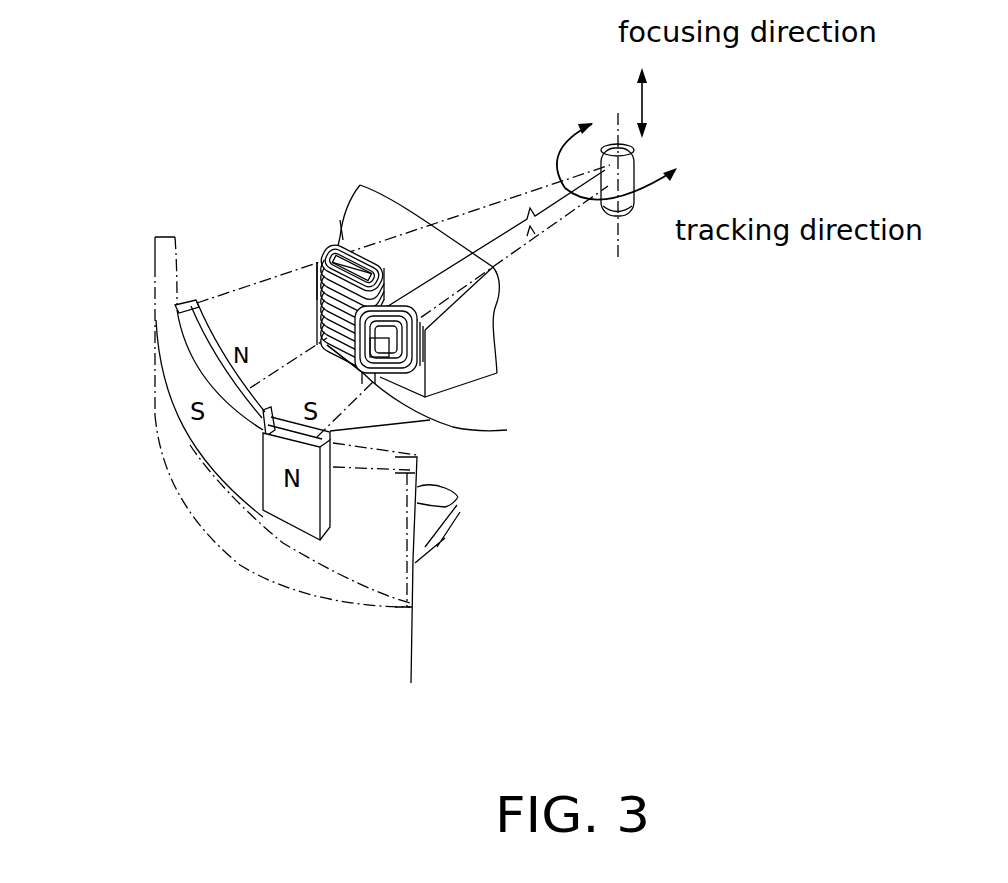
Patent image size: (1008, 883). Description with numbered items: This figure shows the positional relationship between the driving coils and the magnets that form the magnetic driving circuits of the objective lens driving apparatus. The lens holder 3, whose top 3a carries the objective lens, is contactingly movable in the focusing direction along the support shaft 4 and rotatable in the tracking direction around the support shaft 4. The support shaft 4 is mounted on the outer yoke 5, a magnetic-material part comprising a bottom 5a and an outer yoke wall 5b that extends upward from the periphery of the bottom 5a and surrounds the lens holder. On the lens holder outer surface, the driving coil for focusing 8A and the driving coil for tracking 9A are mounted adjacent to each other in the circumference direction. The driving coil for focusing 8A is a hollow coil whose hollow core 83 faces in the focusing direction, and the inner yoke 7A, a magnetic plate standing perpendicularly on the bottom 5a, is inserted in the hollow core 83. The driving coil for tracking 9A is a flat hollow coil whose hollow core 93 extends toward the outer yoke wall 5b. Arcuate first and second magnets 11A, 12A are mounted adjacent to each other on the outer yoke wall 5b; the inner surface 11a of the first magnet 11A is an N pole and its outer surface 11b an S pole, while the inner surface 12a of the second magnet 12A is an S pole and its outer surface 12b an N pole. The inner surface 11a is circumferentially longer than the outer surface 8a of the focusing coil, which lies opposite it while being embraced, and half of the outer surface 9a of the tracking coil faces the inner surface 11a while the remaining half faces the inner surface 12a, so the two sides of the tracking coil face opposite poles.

The lens holder 3 is at (515, 357).
The top 3a is at (481, 297).
The support shaft 4 is at (630, 183).
The outer yoke 5 is at (412, 591).
The bottom 5a is at (425, 543).
The outer yoke wall 5b is at (458, 497).
The inner yoke 7A is at (350, 253).
The driving coil for focusing 8A is at (327, 243).
The outer surface of driving coil for focusing 8a is at (315, 290).
The hollow core 83 is at (333, 245).
The driving coil for tracking 9A is at (458, 384).
The outer surface of driving coil for tracking 9a is at (478, 380).
The hollow core 93 is at (383, 380).
The inner surface 11a is at (212, 345).
The outer surface 11b is at (207, 430).
The first magnet 11A is at (212, 464).
The inner surface 12a is at (343, 427).
The outer surface 12b is at (278, 512).
The second magnet 12A is at (292, 530).